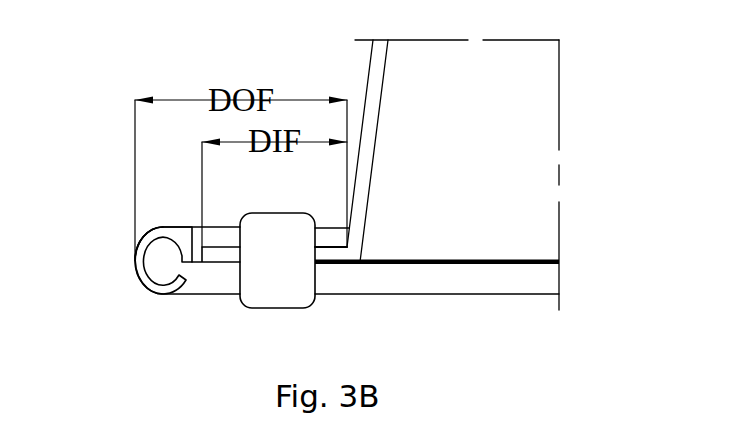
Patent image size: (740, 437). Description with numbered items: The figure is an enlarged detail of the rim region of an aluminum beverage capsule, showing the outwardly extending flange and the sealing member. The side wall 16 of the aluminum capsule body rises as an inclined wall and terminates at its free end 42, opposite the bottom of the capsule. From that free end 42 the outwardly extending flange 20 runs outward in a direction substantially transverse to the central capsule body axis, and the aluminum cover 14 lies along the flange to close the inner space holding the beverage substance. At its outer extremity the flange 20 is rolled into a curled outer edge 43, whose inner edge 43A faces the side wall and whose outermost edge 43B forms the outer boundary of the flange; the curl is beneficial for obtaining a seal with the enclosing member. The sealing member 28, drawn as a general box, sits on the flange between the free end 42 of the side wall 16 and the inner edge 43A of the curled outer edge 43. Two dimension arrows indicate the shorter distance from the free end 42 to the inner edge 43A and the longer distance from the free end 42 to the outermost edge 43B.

The cover 14 is at (448, 265).
The side wall 16 is at (377, 77).
The outwardly extending flange 20 is at (329, 253).
The sealing member 28 is at (277, 228).
The free end 42 is at (356, 253).
The curled outer edge 43 is at (157, 288).
The inner edge 43A is at (202, 263).
The outermost edge 43B is at (135, 262).